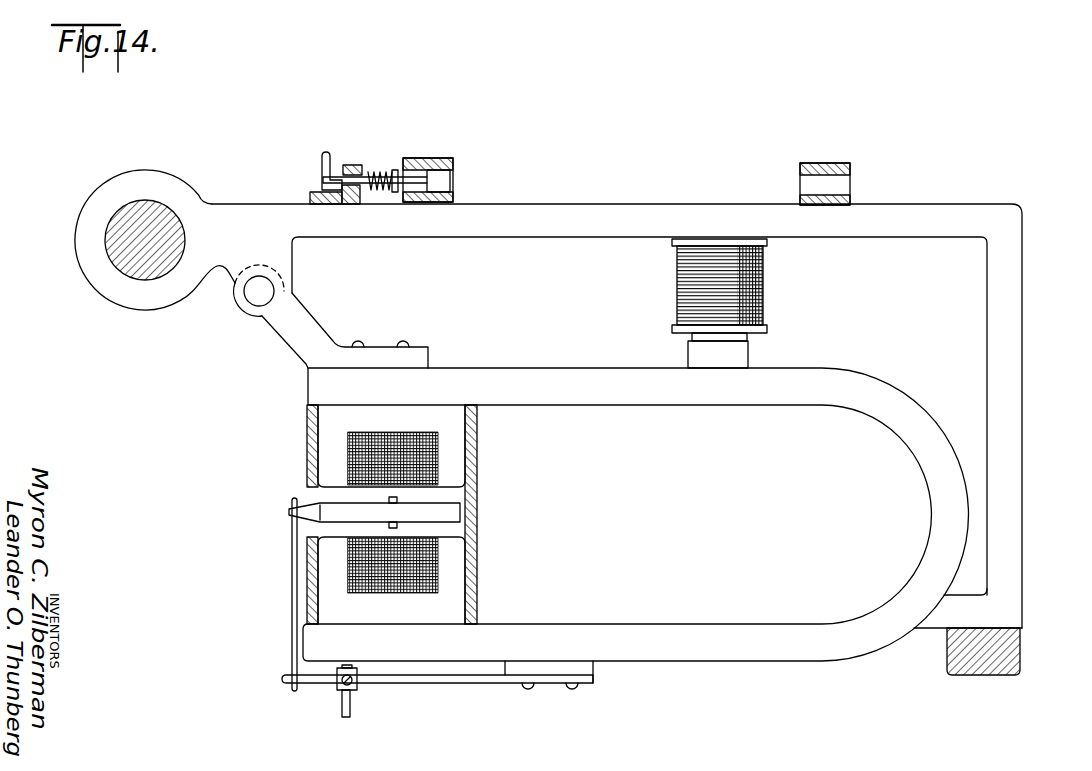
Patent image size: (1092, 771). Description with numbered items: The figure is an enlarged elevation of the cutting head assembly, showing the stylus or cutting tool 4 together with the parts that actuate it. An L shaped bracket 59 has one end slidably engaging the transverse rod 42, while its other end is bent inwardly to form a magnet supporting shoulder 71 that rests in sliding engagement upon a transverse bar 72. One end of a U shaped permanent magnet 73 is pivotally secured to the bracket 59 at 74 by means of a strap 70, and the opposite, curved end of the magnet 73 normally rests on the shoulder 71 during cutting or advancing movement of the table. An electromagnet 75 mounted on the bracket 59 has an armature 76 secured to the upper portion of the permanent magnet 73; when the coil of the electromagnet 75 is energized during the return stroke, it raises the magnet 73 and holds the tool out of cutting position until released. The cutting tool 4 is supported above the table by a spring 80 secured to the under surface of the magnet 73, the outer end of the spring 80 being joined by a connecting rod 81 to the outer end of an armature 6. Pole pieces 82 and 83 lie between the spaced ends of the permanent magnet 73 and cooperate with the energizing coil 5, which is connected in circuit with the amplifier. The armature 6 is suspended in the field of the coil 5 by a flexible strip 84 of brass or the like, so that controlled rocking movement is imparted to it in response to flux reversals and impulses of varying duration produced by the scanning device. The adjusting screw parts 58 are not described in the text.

The stylus or cutting tool 4 is at (342, 703).
The energizing coil 5 is at (420, 455).
The armature 6 is at (450, 512).
The transverse rod 42 is at (133, 237).
The adjusting screw assembly 58 is at (433, 158).
The L shaped bracket 59 is at (1017, 305).
The strap 70 is at (312, 328).
The magnet supporting shoulder 71 is at (933, 615).
The transverse bar 72 is at (987, 653).
The U shaped permanent magnet 73 is at (897, 407).
The pivot 74 is at (258, 292).
The electromagnet 75 is at (705, 283).
The armature 76 is at (707, 357).
The spring 80 is at (447, 683).
The connecting rod 81 is at (292, 572).
The pole piece 82 is at (438, 413).
The pole piece 83 is at (447, 600).
The flexible strip 84 is at (390, 500).